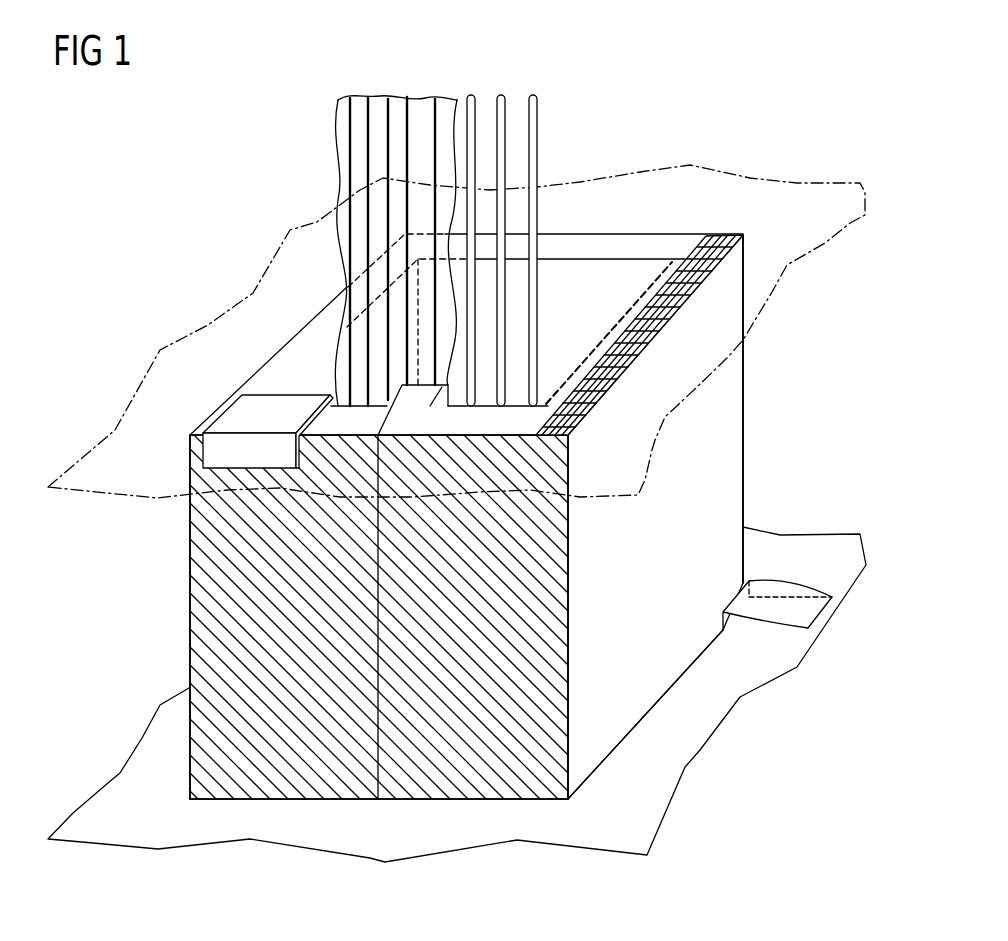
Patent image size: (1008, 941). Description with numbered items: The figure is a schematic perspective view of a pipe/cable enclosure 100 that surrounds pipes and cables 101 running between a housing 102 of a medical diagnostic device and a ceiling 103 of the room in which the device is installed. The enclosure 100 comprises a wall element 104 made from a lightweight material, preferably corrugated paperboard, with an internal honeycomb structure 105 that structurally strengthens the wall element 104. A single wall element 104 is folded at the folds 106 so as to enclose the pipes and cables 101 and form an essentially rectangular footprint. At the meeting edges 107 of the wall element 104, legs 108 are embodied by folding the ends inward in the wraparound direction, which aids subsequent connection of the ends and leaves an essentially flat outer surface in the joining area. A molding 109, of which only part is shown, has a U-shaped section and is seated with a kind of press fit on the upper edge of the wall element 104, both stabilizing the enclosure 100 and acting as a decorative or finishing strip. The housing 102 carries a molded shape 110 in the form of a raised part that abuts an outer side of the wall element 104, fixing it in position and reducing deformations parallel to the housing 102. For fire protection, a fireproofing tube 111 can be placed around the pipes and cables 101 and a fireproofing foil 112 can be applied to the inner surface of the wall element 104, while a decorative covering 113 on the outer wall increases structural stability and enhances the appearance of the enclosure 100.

The pipe/cable enclosure 100 is at (216, 185).
The pipes and cables 101 is at (350, 130).
The housing 102 is at (780, 537).
The ceiling 103 is at (783, 187).
The wall element 104 is at (733, 372).
The internal honeycomb structure 105 is at (652, 330).
The folds 106 is at (745, 425).
The meeting edges 107 is at (378, 799).
The legs 108 is at (420, 392).
The molding 109 is at (228, 420).
The molded shape 110 is at (772, 608).
The fireproofing tube 111 is at (341, 187).
The fireproofing foil 112 is at (633, 300).
The decorative covering 113 is at (557, 607).